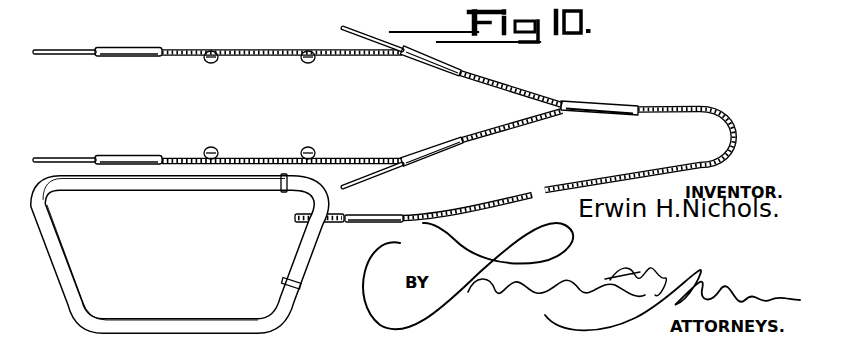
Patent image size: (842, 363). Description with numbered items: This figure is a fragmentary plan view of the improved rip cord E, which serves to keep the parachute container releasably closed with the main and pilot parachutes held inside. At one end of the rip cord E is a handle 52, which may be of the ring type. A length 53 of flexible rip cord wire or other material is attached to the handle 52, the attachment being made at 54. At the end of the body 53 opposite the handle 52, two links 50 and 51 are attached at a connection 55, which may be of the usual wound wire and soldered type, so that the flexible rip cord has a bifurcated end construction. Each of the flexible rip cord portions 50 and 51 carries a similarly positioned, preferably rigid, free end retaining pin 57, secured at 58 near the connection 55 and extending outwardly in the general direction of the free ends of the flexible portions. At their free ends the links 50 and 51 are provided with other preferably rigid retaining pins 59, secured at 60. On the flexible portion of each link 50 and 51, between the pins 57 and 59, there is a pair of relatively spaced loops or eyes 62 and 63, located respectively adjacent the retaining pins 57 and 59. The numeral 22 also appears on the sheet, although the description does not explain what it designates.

The cable assembly 22 is at (249, 3).
The rip cord link 50 is at (359, 57).
The rip cord link 51 is at (337, 158).
The handle 52 is at (290, 306).
The length of flexible rip cord wire 53 is at (498, 200).
The attachment of rip cord length to handle 54 is at (329, 213).
The connection 55 is at (598, 106).
The free end retaining pin 57 is at (368, 12).
The securing point of retaining pin 58 is at (428, 62).
The free end retaining pin 59 is at (61, 50).
The securing point of free end retaining pin 60 is at (137, 57).
The loop or eye 62 is at (309, 63).
The loop or eye 63 is at (211, 63).
The rip cord E is at (697, 100).